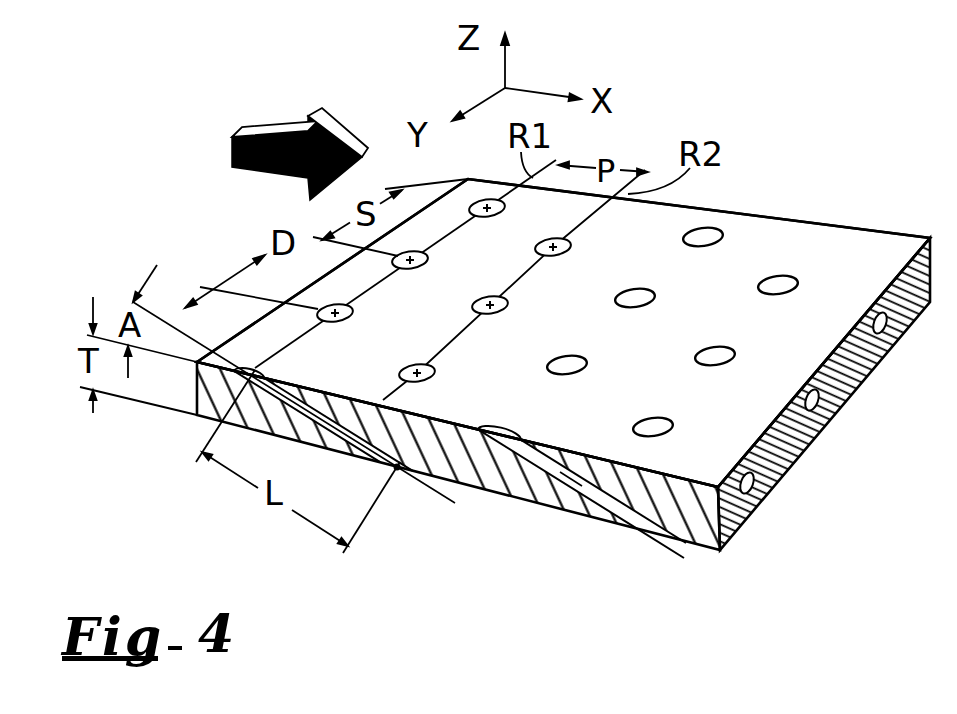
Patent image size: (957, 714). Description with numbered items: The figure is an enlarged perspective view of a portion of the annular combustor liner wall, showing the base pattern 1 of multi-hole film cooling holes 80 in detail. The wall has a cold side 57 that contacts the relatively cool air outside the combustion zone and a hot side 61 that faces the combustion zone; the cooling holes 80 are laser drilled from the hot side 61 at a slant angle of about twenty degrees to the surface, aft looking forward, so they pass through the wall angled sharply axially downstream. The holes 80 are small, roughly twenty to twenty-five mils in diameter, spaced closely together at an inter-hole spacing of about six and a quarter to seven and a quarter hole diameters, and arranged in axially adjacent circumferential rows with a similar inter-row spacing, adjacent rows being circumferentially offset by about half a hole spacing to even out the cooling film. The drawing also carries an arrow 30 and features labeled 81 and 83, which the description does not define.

The base pattern 1 is at (700, 270).
The laser beam direction arrow 30 is at (275, 126).
The cold side 57 is at (822, 253).
The hot side 61 is at (850, 385).
The multi-hole film cooling holes 80 is at (708, 232).
The angled orifice channel 81 is at (567, 483).
The channel exit opening 83 is at (667, 552).